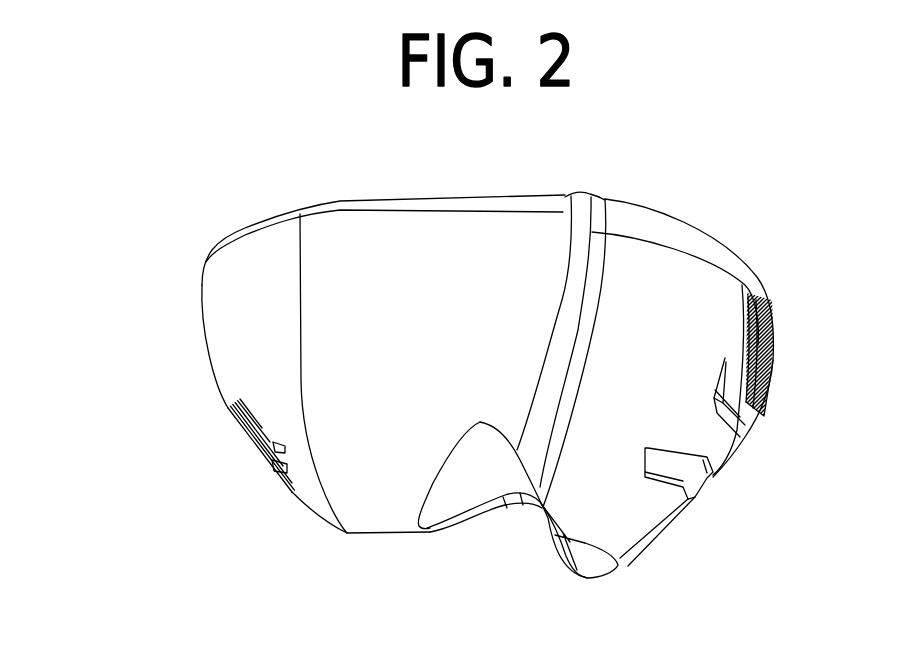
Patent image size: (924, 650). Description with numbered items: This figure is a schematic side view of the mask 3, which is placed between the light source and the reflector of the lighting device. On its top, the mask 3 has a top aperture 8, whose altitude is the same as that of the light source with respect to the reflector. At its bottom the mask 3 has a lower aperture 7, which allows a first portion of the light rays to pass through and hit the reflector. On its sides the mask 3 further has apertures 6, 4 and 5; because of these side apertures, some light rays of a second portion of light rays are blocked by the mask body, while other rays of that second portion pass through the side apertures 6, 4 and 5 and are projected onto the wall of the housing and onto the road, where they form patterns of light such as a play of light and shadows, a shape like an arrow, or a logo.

The top aperture 8 is at (407, 192).
The mask 3 is at (653, 218).
The side aperture 4 is at (740, 387).
The side aperture 5 is at (703, 478).
The side aperture 6 is at (253, 463).
The lower aperture 7 is at (482, 485).